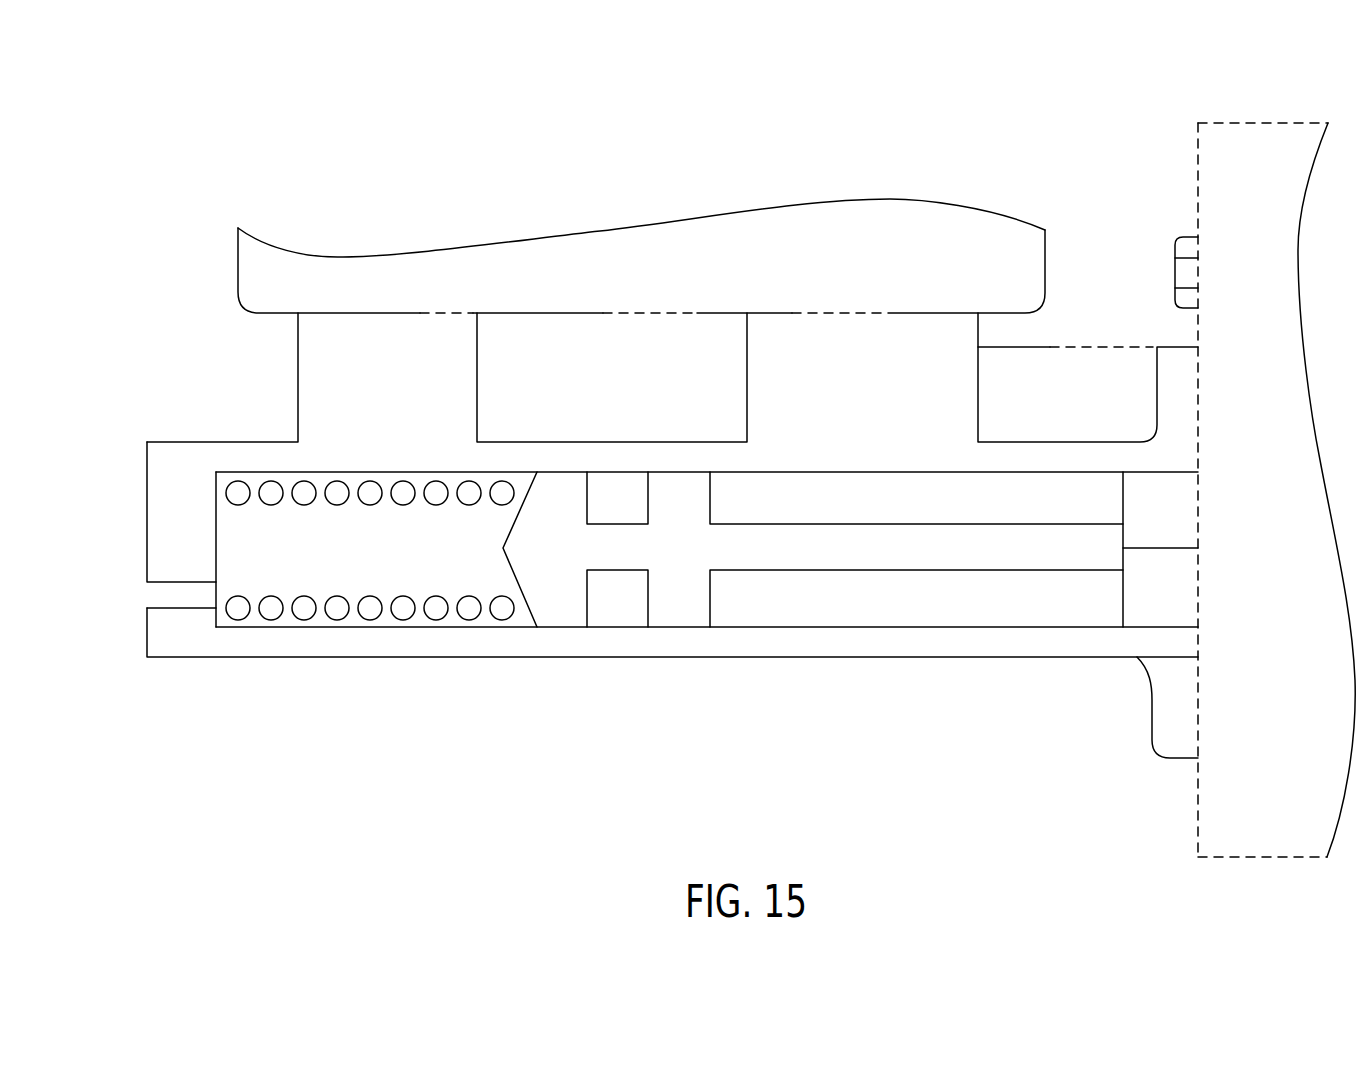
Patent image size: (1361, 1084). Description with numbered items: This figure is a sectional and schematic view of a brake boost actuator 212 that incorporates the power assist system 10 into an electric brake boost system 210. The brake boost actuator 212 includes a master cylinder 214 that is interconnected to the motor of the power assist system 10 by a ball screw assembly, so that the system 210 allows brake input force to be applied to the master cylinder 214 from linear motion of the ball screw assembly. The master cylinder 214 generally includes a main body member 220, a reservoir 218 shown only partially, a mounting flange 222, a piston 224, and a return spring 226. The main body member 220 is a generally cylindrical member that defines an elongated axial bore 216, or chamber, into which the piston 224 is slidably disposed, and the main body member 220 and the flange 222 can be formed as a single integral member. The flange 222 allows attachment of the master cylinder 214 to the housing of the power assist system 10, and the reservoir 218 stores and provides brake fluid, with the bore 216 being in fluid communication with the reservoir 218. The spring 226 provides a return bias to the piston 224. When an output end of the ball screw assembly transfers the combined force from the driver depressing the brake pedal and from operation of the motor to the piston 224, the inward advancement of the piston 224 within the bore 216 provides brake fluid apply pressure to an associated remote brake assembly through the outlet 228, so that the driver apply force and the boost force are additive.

The power assist system 10 is at (1298, 450).
The electric brake boost system 210 is at (402, 182).
The brake boost actuator 212 is at (126, 483).
The master cylinder 214 is at (893, 666).
The bore 216 is at (413, 628).
The reservoir 218 is at (1045, 243).
The main body member 220 is at (998, 643).
The mounting flange 222 is at (1160, 742).
The piston 224 is at (561, 605).
The return spring 226 is at (303, 614).
The outlet 228 is at (145, 597).